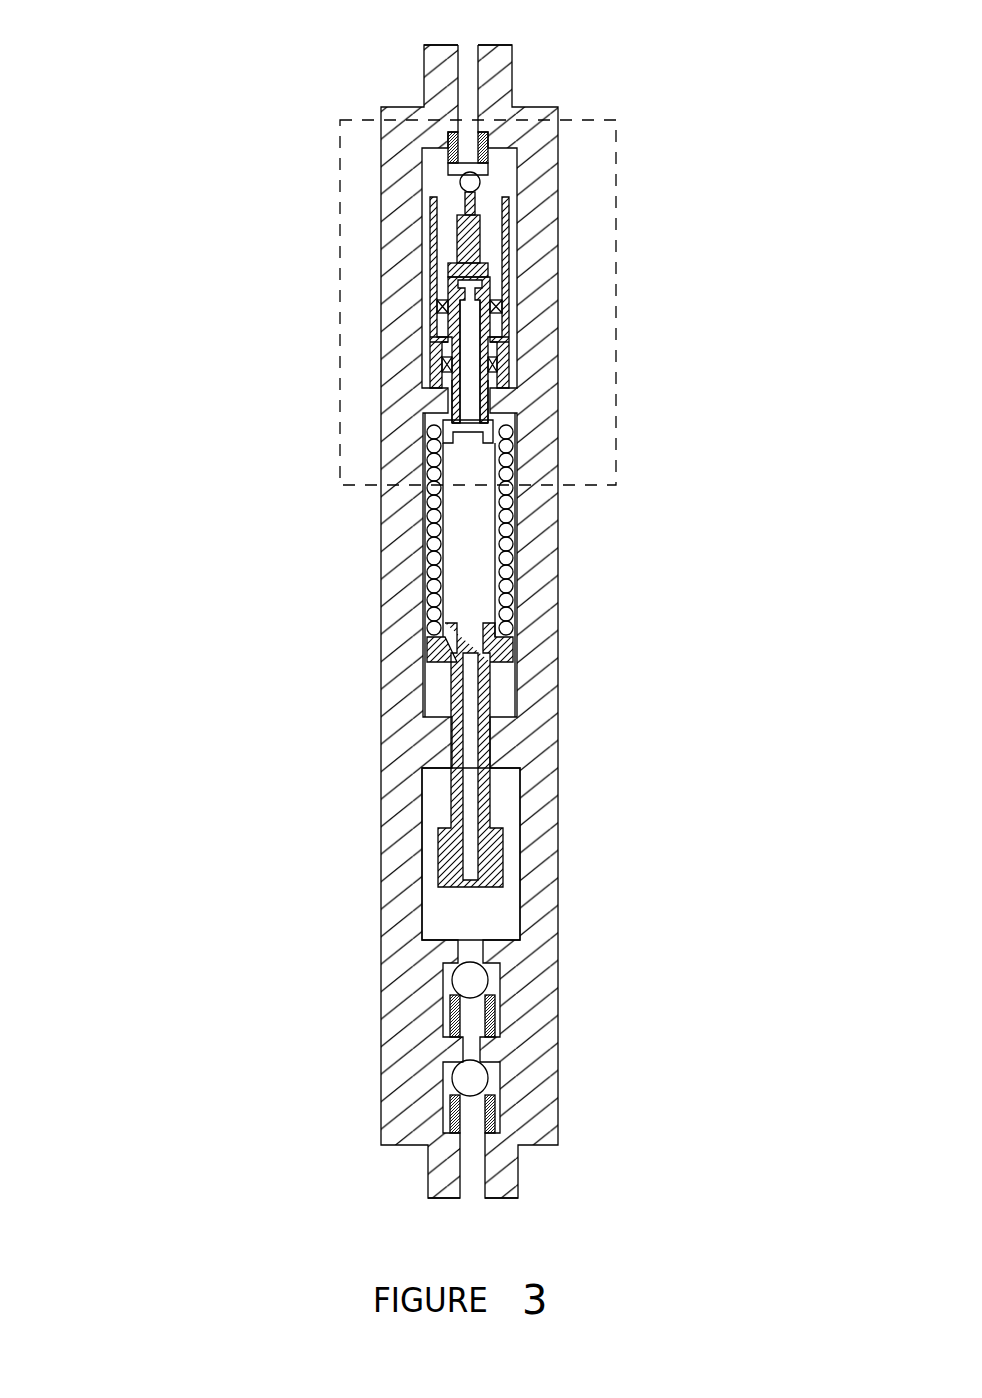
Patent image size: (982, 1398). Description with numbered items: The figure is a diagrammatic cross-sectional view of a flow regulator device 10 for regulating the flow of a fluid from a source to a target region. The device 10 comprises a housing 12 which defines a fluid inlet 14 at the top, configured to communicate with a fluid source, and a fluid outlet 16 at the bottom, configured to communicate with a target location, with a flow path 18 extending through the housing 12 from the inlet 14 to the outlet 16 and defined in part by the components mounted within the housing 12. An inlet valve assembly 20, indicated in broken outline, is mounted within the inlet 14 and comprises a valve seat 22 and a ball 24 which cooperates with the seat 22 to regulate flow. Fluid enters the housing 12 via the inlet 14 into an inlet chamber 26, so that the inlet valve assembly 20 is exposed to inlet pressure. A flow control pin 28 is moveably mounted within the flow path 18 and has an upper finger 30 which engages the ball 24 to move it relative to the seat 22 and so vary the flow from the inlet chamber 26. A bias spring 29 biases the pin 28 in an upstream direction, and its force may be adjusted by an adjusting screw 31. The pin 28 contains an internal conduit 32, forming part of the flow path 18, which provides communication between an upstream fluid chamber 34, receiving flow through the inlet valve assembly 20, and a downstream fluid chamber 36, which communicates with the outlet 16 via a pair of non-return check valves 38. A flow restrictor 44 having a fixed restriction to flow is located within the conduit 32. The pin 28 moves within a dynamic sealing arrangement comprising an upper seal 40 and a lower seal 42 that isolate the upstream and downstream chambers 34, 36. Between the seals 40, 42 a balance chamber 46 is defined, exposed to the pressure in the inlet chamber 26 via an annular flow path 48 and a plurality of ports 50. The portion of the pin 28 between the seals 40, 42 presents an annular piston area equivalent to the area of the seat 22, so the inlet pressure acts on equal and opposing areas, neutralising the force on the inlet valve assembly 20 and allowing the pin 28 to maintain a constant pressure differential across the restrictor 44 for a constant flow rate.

The flow regulator device 10 is at (172, 157).
The housing 12 is at (380, 540).
The fluid inlet 14 is at (470, 65).
The fluid outlet 16 is at (478, 1168).
The flow path 18 is at (490, 916).
The inlet valve assembly 20 is at (497, 164).
The valve seat 22 is at (476, 205).
The ball 24 is at (482, 176).
The inlet chamber 26 is at (430, 162).
The flow control pin 28 is at (507, 225).
The bias spring 29 is at (432, 586).
The upper finger 30 is at (458, 200).
The adjusting screw 31 is at (486, 856).
The internal conduit 32 is at (472, 380).
The upstream fluid chamber 34 is at (491, 265).
The downstream fluid chamber 36 is at (476, 510).
The non-return check valves 38 is at (505, 985).
The upper seal 40 is at (436, 306).
The lower seal 42 is at (441, 366).
The flow restrictor 44 is at (503, 306).
The balance chamber 46 is at (498, 337).
The annular flow path 48 is at (446, 270).
The ports 50 is at (436, 345).